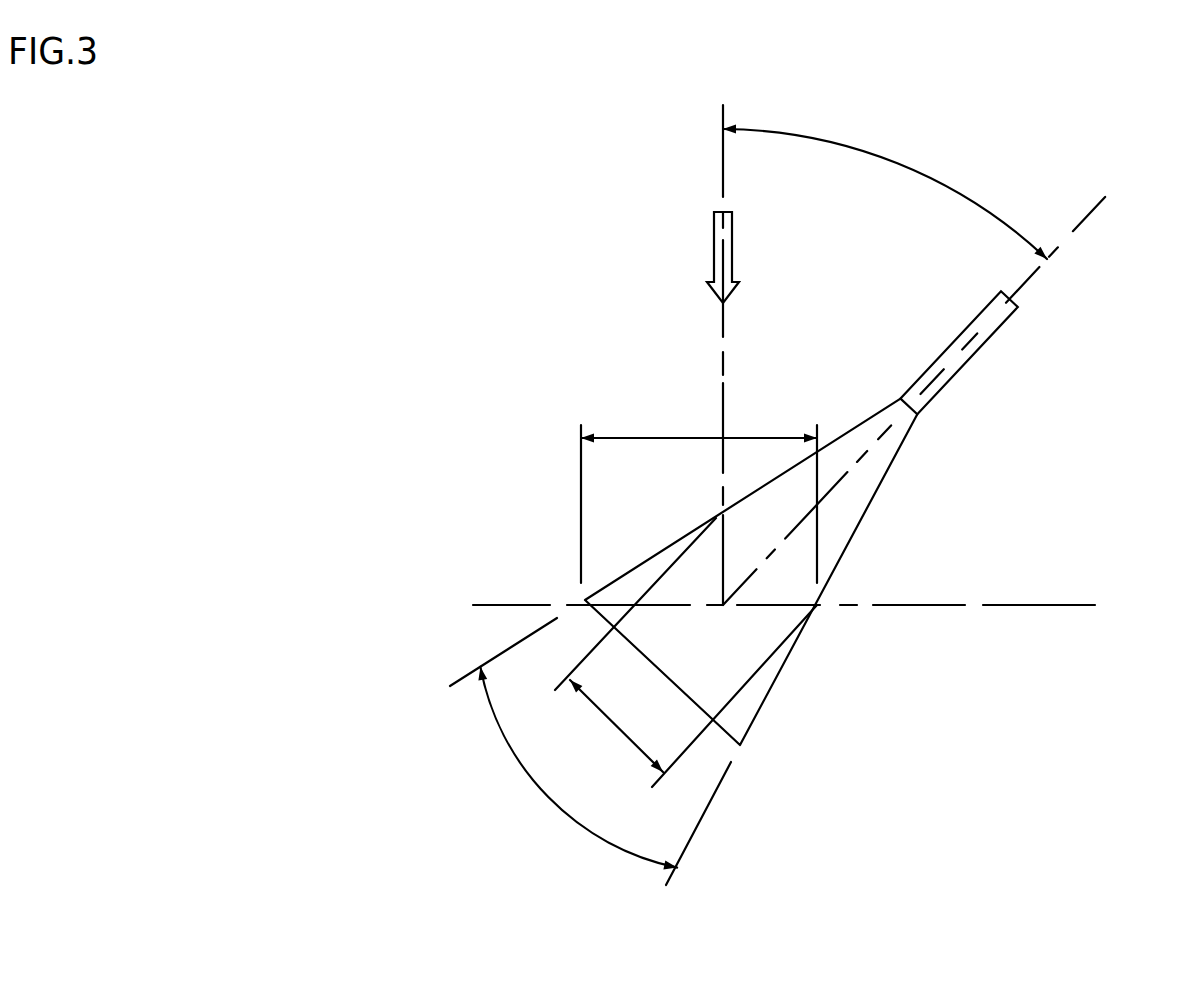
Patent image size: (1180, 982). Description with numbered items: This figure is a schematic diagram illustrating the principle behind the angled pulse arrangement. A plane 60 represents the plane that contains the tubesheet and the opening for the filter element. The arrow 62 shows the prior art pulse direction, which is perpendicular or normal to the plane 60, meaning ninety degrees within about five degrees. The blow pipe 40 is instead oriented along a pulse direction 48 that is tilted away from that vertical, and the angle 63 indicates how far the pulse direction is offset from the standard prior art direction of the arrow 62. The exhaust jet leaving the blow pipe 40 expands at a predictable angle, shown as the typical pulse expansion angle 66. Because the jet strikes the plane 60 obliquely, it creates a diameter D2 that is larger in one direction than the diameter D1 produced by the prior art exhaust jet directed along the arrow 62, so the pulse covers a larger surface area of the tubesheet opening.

The blow pipe 40 is at (975, 352).
The pulse direction 48 is at (1093, 209).
The plane 60 is at (1040, 605).
The arrow 62 is at (732, 240).
The angle 63 is at (915, 169).
The angle 66 is at (530, 777).
The diameter D1 is at (602, 715).
The diameter D2 is at (638, 438).